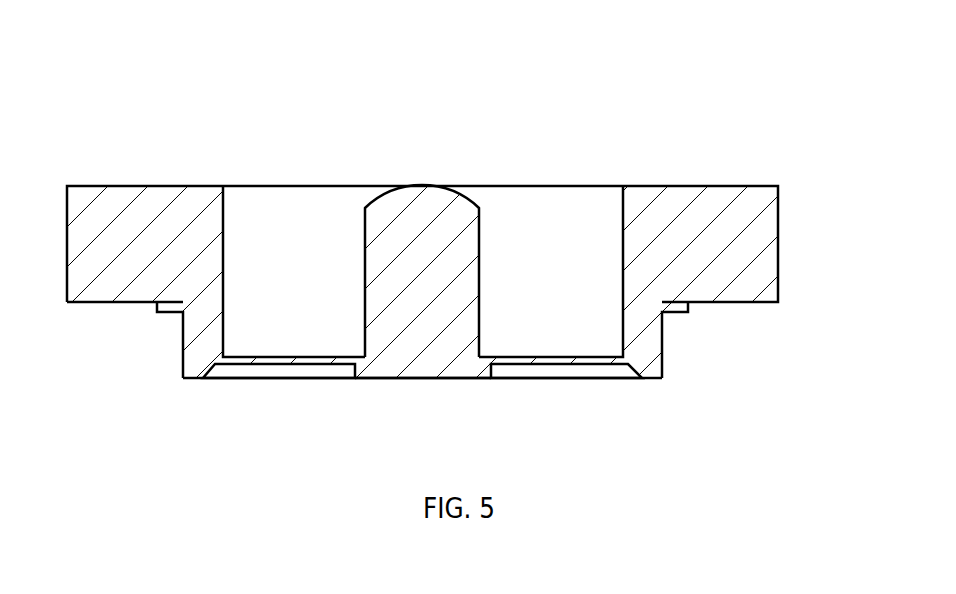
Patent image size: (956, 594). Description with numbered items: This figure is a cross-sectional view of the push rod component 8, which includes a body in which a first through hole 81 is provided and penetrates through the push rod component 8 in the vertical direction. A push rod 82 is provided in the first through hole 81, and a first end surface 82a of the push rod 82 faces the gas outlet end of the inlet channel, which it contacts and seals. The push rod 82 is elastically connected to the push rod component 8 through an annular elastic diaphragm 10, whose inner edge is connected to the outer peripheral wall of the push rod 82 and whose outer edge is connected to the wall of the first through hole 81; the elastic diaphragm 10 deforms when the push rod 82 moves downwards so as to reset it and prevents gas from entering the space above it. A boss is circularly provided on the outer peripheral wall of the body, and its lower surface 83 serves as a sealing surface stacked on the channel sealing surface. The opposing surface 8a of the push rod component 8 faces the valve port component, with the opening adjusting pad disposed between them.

The push rod component 8 is at (156, 265).
The first through hole 81 is at (300, 230).
The push rod 82 is at (456, 262).
The lower surface 83 is at (105, 303).
The opposing surface 8a is at (665, 379).
The first end surface 82a is at (440, 395).
The elastic diaphragm 10 is at (583, 361).